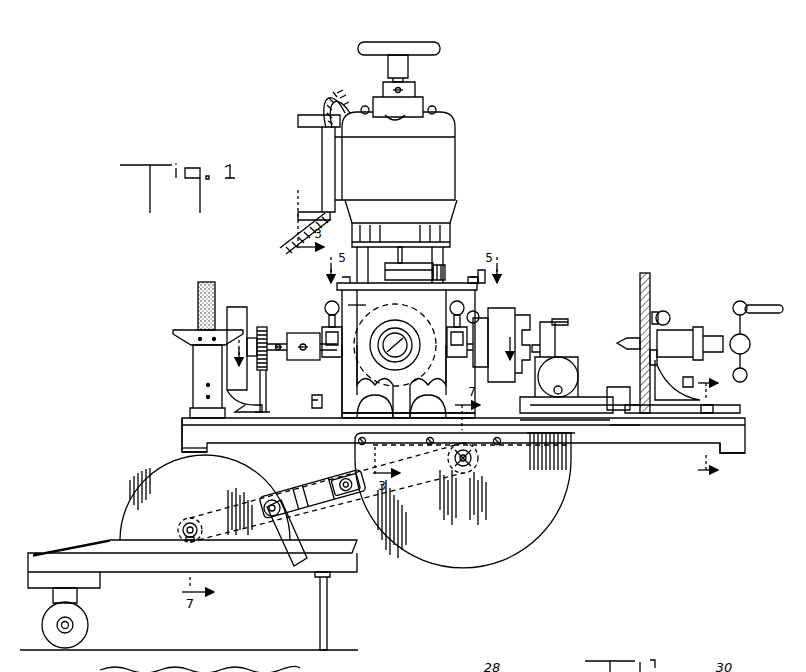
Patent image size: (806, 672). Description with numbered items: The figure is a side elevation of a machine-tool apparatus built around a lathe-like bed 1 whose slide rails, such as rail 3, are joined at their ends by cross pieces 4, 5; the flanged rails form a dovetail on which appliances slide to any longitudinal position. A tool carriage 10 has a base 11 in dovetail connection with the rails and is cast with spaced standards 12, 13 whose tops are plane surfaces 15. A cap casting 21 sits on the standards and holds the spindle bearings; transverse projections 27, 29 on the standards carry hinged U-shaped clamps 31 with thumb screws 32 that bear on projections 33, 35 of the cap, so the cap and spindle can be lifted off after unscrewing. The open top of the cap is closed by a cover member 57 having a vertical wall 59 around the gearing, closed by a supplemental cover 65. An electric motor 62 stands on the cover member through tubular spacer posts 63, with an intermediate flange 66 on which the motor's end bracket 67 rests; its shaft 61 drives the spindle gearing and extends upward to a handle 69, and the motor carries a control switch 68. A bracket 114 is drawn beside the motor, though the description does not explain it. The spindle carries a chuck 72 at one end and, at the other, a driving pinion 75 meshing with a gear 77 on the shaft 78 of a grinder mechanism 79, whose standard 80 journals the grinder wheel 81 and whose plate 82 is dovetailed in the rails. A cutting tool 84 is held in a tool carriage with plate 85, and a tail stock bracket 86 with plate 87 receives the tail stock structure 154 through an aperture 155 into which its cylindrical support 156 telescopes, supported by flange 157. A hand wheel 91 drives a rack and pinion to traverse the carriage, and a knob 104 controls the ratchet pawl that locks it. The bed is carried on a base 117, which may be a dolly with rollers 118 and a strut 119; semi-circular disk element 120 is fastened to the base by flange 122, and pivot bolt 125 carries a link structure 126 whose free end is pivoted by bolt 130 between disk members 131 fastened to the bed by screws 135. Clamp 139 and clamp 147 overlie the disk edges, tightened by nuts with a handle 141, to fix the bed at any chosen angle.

The bed 1 is at (632, 433).
The slide rail 3 is at (597, 443).
The cross piece 4 is at (735, 452).
The cross piece 5 is at (182, 448).
The tool carriage 10 is at (407, 347).
The base 11 is at (348, 420).
The standard 12 is at (332, 365).
The standard 13 is at (477, 454).
The plane surfaces 15 is at (388, 322).
The cap casting 21 is at (480, 292).
The transverse projection 27 is at (320, 360).
The transverse projection 29 is at (455, 350).
The U-shaped clamps 31 is at (330, 340).
The clamping thumb screws 32 is at (470, 265).
The projection 33 is at (500, 310).
The projection 35 is at (300, 333).
The cover member 57 is at (455, 300).
The vertical wall 59 is at (498, 282).
The shaft 61 is at (405, 260).
The electric motor 62 is at (445, 150).
The tubular spacer posts 63 is at (440, 228).
The supplemental cover 65 is at (482, 272).
The intermediate flange 66 is at (395, 228).
The end bracket 67 is at (418, 222).
The control switch 68 is at (386, 88).
The handle 69 is at (405, 48).
The chuck 72 is at (522, 322).
The driving pinion 75 is at (265, 335).
The gear 77 is at (263, 372).
The shaft 78 is at (258, 330).
The grinder mechanism 79 is at (203, 357).
The standard 80 is at (233, 397).
The grinder wheel 81 is at (200, 295).
The plate 82 is at (185, 422).
The cutting tool 84 is at (555, 345).
The plate 85 is at (612, 420).
The bracket 86 is at (651, 283).
The plate 87 is at (735, 408).
The hand wheel 91 is at (345, 397).
The knob 104 is at (320, 395).
The bracket 114 is at (305, 122).
The base 117 is at (83, 560).
The rollers 118 is at (58, 640).
The strut 119 is at (328, 612).
The semi-circular disk element 120 is at (132, 504).
The flange 122 is at (162, 543).
The pivot bolt 125 is at (196, 520).
The link structure 126 is at (320, 508).
The pivot bolt 130 is at (470, 463).
The semi-circular disk member 131 is at (493, 552).
The screws 135 is at (578, 455).
The clamp 139 is at (285, 500).
The handle 141 is at (292, 535).
The clamp 147 is at (345, 484).
The tail stock structure 154 is at (680, 338).
The aperture 155 is at (630, 338).
The cylindrical support 156 is at (640, 355).
The flange 157 is at (668, 315).